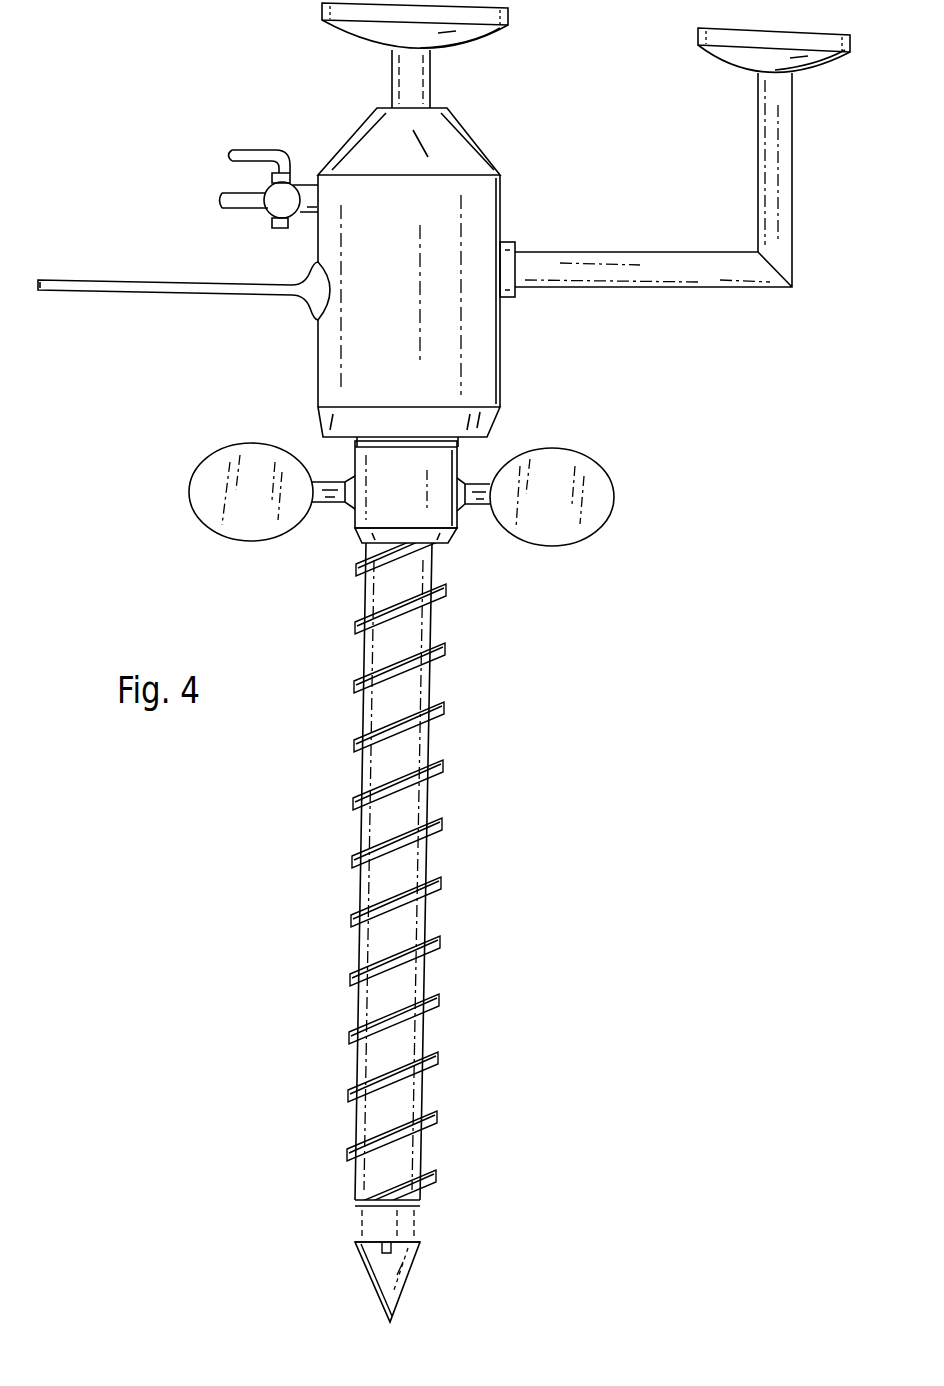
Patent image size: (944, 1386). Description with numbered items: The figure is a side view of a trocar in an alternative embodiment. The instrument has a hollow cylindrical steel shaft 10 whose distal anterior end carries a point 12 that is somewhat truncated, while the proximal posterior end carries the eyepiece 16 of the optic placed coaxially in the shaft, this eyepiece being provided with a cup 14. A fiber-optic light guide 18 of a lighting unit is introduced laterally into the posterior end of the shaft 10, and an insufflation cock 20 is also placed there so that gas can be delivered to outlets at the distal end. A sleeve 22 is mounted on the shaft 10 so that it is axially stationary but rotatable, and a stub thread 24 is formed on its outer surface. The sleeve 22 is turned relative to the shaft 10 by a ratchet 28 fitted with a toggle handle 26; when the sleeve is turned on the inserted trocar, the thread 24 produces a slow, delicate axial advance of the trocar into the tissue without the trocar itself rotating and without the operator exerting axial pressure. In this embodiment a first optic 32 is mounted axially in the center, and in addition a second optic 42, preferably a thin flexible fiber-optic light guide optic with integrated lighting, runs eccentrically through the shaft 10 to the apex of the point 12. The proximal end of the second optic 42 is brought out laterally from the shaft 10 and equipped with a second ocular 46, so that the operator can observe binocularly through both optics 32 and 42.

The shaft 10 is at (408, 1220).
The point 12 is at (402, 1274).
The cup 14 is at (474, 35).
The eyepiece 16 is at (426, 77).
The fiber-optic light guide 18 is at (145, 297).
The insufflation cock 20 is at (272, 210).
The sleeve 22 is at (418, 812).
The stub thread 24 is at (444, 886).
The toggle handle 26 is at (597, 486).
The ratchet 28 is at (373, 515).
The first optic 32 is at (383, 1250).
The second optic 42 is at (374, 1284).
The second ocular 46 is at (772, 145).